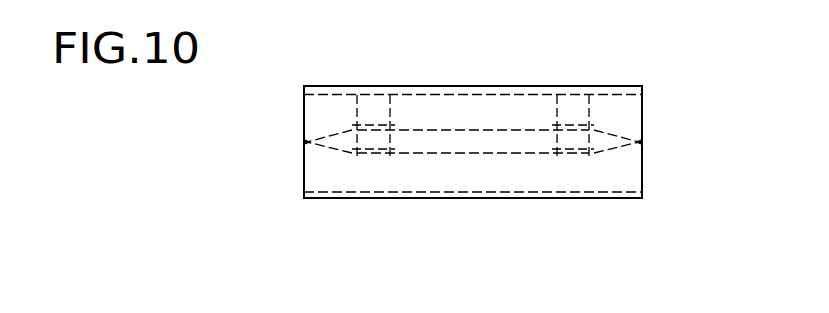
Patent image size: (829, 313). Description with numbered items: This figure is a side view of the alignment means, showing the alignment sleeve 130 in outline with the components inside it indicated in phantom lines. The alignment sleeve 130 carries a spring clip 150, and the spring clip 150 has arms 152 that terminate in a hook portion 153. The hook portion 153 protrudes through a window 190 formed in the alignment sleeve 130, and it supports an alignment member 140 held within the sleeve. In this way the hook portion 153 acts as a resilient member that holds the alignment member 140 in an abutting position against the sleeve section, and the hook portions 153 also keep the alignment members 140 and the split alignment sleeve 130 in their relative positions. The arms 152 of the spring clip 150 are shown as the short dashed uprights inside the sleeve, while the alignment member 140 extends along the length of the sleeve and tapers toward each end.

The alignment sleeve 130 is at (331, 112).
The alignment member 140 is at (438, 156).
The spring clip 150 is at (508, 86).
The arms 152 is at (377, 112).
The hook portion 153 is at (343, 134).
The window 190 is at (346, 148).